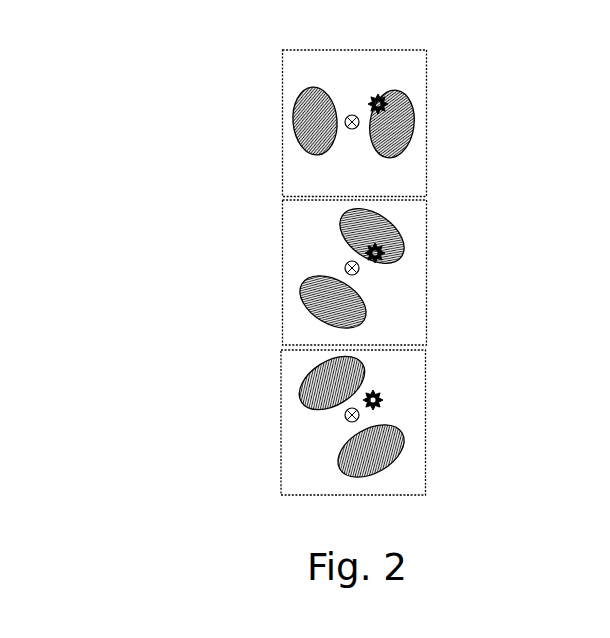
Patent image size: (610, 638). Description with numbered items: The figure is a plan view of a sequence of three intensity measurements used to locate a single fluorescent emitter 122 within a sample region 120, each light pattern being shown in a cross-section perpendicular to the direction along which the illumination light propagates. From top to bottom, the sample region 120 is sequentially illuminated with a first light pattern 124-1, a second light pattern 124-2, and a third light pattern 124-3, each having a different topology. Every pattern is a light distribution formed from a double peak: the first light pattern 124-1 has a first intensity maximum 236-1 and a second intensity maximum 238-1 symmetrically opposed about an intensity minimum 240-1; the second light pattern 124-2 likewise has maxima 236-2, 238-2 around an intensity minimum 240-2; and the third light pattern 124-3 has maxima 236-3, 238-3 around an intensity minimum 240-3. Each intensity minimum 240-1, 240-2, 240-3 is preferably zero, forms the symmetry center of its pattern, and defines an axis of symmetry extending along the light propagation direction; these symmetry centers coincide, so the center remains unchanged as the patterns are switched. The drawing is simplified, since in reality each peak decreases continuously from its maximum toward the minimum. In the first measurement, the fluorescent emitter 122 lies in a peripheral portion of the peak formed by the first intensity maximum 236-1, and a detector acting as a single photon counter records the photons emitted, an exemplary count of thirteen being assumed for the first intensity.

The sample region 120 is at (428, 190).
The fluorescent emitter 122 is at (385, 98).
The first light pattern 124-1 is at (190, 158).
The second light pattern 124-2 is at (190, 301).
The third light pattern 124-3 is at (198, 450).
The first intensity maximum 236-1 is at (393, 123).
The first intensity maximum 236-2 is at (338, 303).
The first intensity maximum 236-3 is at (340, 375).
The second intensity maximum 238-1 is at (315, 120).
The second intensity maximum 238-2 is at (377, 230).
The second intensity maximum 238-3 is at (370, 452).
The intensity minimum 240-1 is at (352, 129).
The intensity minimum 240-2 is at (345, 268).
The intensity minimum 240-3 is at (350, 423).